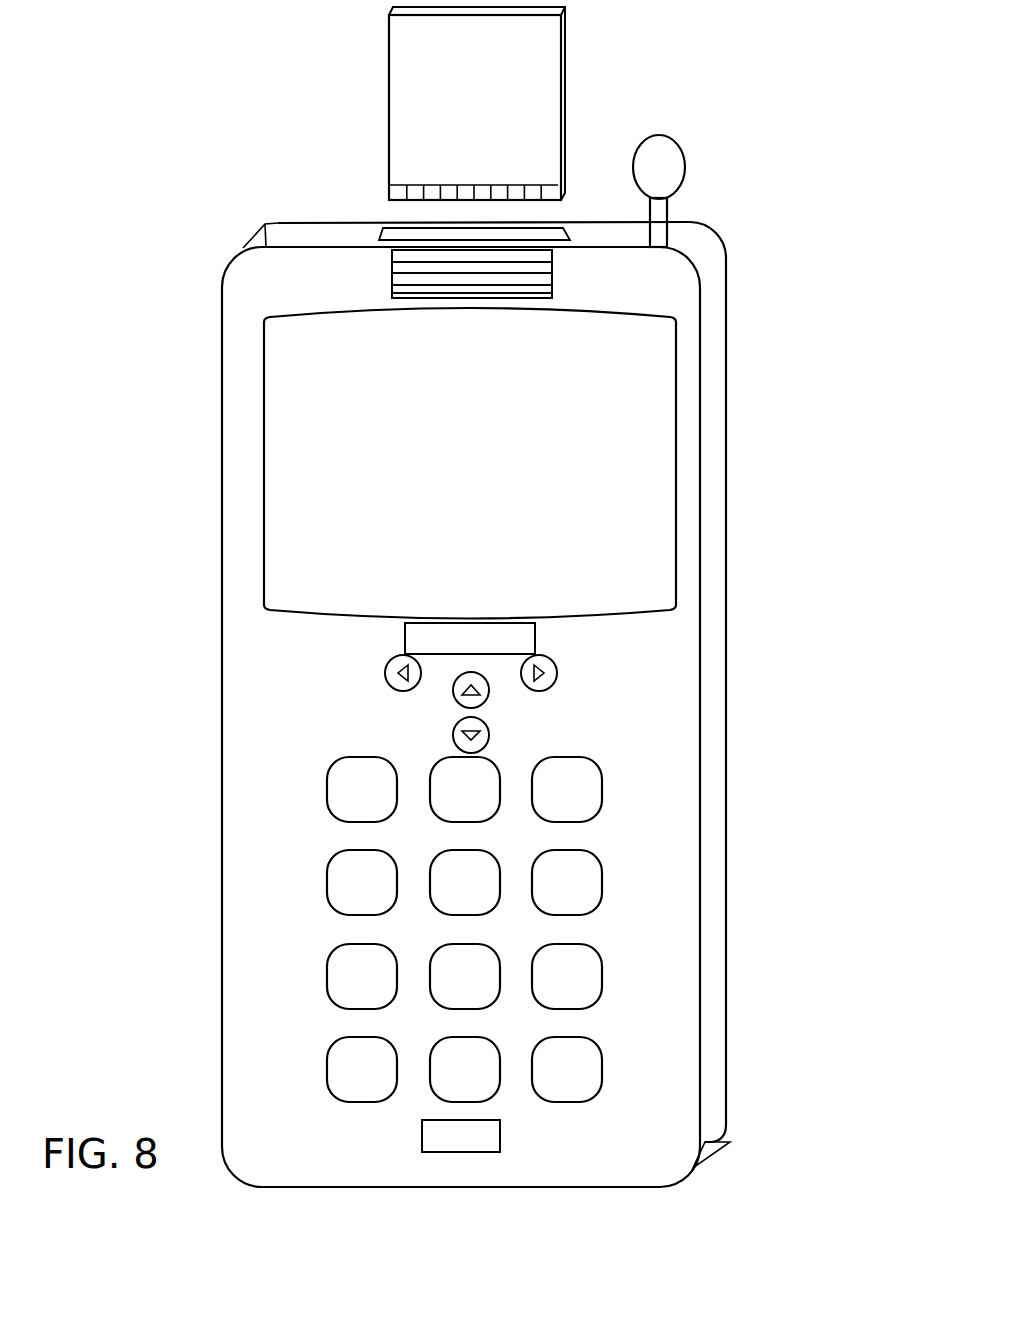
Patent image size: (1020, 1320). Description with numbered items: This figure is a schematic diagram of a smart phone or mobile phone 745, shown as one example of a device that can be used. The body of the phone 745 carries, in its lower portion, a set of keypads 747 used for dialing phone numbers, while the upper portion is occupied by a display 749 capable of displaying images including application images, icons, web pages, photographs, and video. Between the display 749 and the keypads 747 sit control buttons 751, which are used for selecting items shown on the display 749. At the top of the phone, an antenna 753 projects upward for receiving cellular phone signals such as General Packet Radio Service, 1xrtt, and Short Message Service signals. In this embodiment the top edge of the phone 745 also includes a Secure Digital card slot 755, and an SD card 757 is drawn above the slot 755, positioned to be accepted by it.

The smart phone or mobile phone 745 is at (222, 284).
The set of keypads 747 is at (625, 797).
The display 749 is at (676, 462).
The control buttons 751 is at (420, 698).
The antenna 753 is at (688, 177).
The Secure Digital (SD) card slot 755 is at (415, 236).
The SD card 757 is at (568, 70).